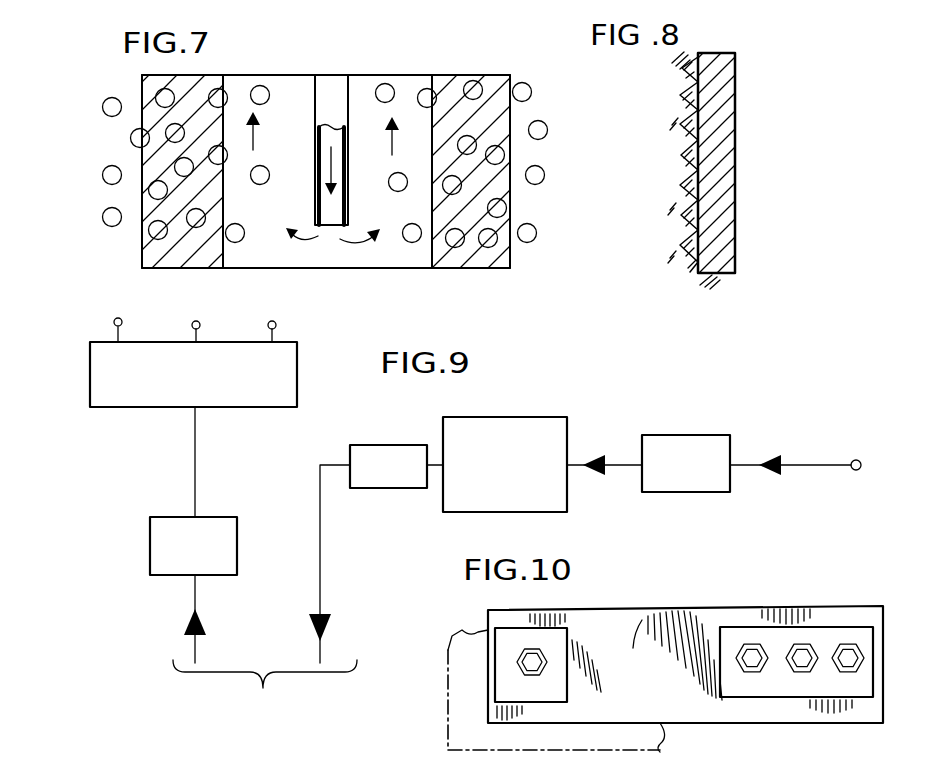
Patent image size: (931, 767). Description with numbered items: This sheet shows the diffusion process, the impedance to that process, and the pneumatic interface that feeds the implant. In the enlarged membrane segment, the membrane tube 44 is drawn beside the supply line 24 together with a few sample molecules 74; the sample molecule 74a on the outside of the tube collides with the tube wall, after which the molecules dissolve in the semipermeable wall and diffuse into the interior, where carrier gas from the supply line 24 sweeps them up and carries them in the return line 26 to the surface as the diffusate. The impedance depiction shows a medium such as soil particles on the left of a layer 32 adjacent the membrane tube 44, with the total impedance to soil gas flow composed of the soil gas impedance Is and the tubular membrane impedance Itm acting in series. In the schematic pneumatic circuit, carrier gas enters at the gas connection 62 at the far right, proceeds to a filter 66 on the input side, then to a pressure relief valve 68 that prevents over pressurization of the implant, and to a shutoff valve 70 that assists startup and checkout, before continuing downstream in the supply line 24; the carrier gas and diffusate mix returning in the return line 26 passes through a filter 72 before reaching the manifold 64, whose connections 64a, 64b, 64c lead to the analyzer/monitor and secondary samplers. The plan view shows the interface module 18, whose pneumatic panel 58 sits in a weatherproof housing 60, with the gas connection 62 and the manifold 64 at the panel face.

In FIG. 10, the interface module 18 is at (708, 590).
In FIG. 7, the supply line 24 is at (332, 92).
In FIG. 9, the supply line 24 is at (325, 592).
In FIG. 9, the carrier gas return line 26 is at (198, 600).
In FIG. 8, the deposit layer 32 is at (676, 92).
In FIG. 7, the membrane tube 44 is at (515, 115).
In FIG. 8, the membrane tube 44 is at (736, 142).
In FIG. 10, the pneumatic panel 58 is at (630, 636).
In FIG. 10, the weather proof housing 60 is at (447, 664).
In FIG. 9, the gas connection 62 is at (866, 443).
In FIG. 10, the gas connection 62 is at (556, 636).
In FIG. 9, the manifold 64 is at (280, 362).
In FIG. 10, the manifold 64 is at (830, 630).
In FIG. 9, the analyzer/monitor and secondary sampler connection 64a is at (114, 320).
In FIG. 10, the analyzer/monitor and secondary sampler connection 64a is at (750, 672).
In FIG. 9, the analyzer/monitor and secondary sampler connection 64b is at (192, 323).
In FIG. 10, the analyzer/monitor and secondary sampler connection 64b is at (800, 672).
In FIG. 9, the analyzer/monitor and secondary sampler connection 64c is at (268, 323).
In FIG. 10, the analyzer/monitor and secondary sampler connection 64c is at (848, 672).
In FIG. 9, the filter 66 is at (664, 445).
In FIG. 9, the pressure relief valve 68 is at (538, 401).
In FIG. 9, the shutoff valve 70 is at (390, 456).
In FIG. 9, the filter 72 is at (150, 546).
In FIG. 7, the sample molecules 74 is at (537, 232).
In FIG. 7, the sample molecule 74a is at (131, 138).
In FIG. 8, the tubular membrane impedance Itm is at (718, 52).
In FIG. 8, the soil gas impedance Is is at (676, 229).